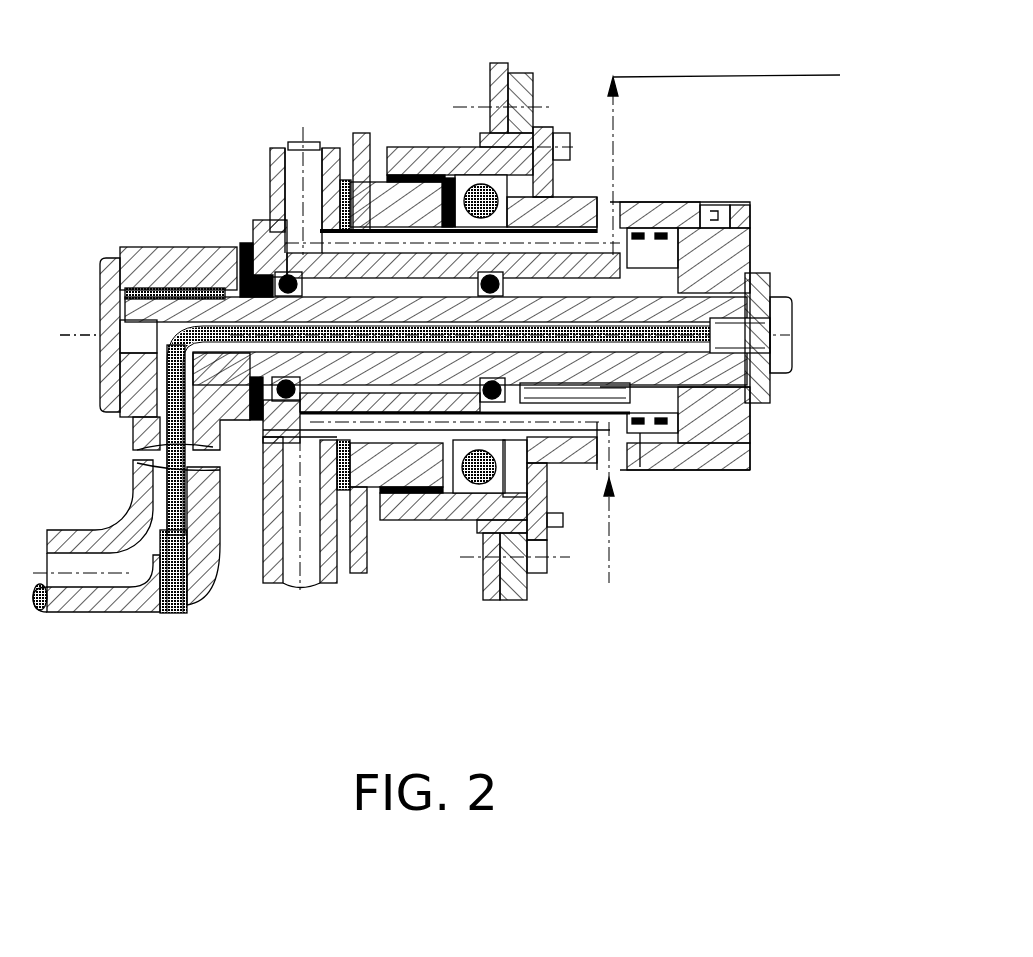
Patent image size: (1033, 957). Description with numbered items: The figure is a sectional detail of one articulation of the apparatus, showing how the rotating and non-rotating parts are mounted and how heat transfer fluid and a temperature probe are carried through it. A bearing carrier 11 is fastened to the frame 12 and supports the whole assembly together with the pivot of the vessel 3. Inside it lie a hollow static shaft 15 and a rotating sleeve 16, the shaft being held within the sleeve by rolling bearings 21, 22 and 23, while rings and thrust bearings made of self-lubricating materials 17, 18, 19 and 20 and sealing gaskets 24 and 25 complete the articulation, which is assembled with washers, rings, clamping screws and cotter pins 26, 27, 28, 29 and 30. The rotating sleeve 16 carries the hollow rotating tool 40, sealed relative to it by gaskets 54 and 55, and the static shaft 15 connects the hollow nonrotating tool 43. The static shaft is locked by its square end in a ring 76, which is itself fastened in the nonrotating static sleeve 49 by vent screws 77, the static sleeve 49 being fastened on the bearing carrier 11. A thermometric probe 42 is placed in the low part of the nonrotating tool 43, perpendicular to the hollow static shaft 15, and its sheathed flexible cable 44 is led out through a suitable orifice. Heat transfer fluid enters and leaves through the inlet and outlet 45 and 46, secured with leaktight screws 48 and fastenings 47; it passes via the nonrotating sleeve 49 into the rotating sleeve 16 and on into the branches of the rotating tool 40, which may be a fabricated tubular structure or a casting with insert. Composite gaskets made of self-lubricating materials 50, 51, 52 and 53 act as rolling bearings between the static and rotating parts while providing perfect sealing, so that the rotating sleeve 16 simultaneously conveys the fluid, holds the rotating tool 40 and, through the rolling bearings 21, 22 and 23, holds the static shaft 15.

The vessel 3 is at (363, 560).
The bearing carrier 11 is at (507, 583).
The frame 12 is at (487, 587).
The static shaft 15 is at (213, 365).
The rotating sleeve 16 is at (283, 593).
The ring of self-lubricating material 17 is at (215, 265).
The ring of self-lubricating material 18 is at (333, 148).
The thrust bearing of self-lubricating material 19 is at (412, 173).
The thrust bearing of self-lubricating material 20 is at (470, 178).
The rolling bearing 21 is at (282, 280).
The rolling bearing 22 is at (474, 180).
The rolling bearing 23 is at (492, 275).
The sealing gasket 24 is at (238, 250).
The sealing gasket 25 is at (448, 445).
The washer 26 is at (108, 330).
The ring 27 is at (145, 330).
The ring 28 is at (183, 287).
The clamping screw 29 is at (787, 307).
The washer 30 is at (770, 281).
The hollow rotating tool 40 is at (325, 580).
The thermometric probe 42 is at (180, 613).
The hollow nonrotating tool 43 is at (88, 597).
The sheathed flexible cable 44 is at (720, 335).
The heat transfer fluid inlet 45 is at (607, 583).
The heat transfer fluid outlet 46 is at (726, 157).
The fastening 47 is at (607, 530).
The leaktight screw 48 is at (740, 440).
The static sleeve 49 is at (737, 220).
The composite gasket of self-lubricating material 50 is at (727, 470).
The composite gasket of self-lubricating material 51 is at (657, 467).
The composite gasket of self-lubricating material 52 is at (657, 202).
The composite gasket of self-lubricating material 53 is at (620, 203).
The gasket 54 is at (262, 222).
The gasket 55 is at (303, 128).
The ring 76 is at (743, 410).
The vent screw 77 is at (750, 208).